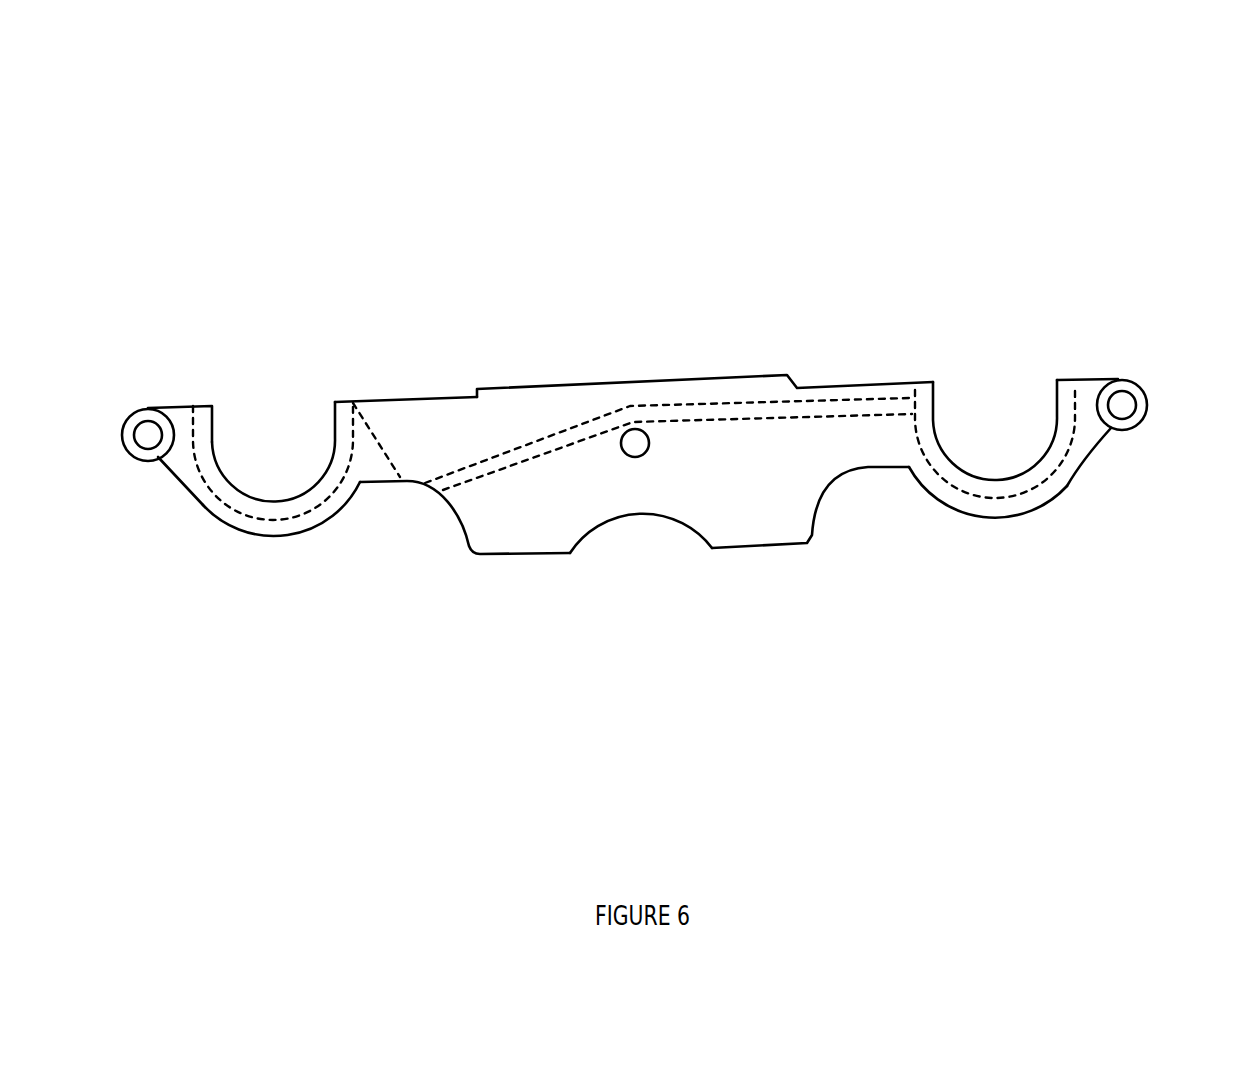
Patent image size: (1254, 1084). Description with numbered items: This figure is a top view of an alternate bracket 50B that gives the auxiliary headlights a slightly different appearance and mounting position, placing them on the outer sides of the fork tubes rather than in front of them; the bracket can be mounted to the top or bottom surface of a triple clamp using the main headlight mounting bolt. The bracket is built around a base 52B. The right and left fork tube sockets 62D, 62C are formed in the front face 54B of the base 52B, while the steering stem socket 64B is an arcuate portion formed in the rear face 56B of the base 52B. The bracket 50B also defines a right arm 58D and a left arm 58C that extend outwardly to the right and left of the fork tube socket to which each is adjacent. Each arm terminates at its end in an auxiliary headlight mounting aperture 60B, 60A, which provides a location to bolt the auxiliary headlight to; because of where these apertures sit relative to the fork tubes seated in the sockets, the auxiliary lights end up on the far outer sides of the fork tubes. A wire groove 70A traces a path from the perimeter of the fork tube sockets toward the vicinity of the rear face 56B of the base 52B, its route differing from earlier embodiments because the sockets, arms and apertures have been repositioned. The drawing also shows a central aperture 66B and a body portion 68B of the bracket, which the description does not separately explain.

The alternate bracket 50B is at (628, 421).
The base 52B is at (465, 432).
The front face 54B is at (399, 376).
The rear face 56B is at (518, 569).
The left arm 58C is at (167, 500).
The right arm 58D is at (1106, 474).
The auxiliary headlight mounting aperture 60A is at (153, 433).
The auxiliary headlight mounting aperture 60B is at (1128, 401).
The left fork tube socket 62C is at (271, 440).
The right fork tube socket 62D is at (990, 405).
The steering stem socket 64B is at (620, 548).
The aperture 66B is at (665, 411).
The web portion 68B is at (740, 501).
The wire groove 70A is at (833, 413).